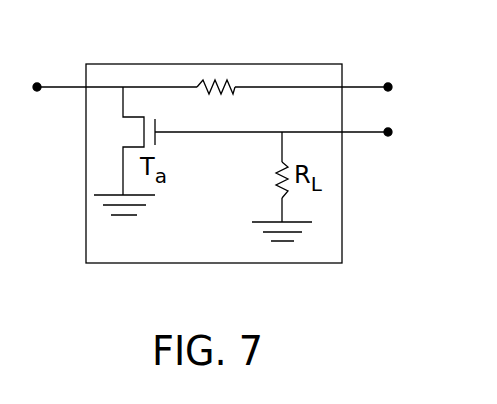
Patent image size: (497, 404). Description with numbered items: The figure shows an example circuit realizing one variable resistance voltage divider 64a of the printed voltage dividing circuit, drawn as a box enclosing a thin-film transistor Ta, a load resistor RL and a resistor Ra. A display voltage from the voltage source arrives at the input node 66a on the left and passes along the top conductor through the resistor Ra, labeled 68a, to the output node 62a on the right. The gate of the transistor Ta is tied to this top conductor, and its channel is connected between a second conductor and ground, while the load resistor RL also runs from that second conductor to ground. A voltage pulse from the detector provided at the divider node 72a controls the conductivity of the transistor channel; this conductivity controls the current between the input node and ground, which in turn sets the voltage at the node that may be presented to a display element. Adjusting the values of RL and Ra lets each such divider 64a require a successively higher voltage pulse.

The input node 62a is at (392, 87).
The variable resistance voltage divider 64a is at (342, 217).
The output node 66a is at (39, 83).
The resistor Ra 68a is at (217, 102).
The divider node 72a is at (392, 132).